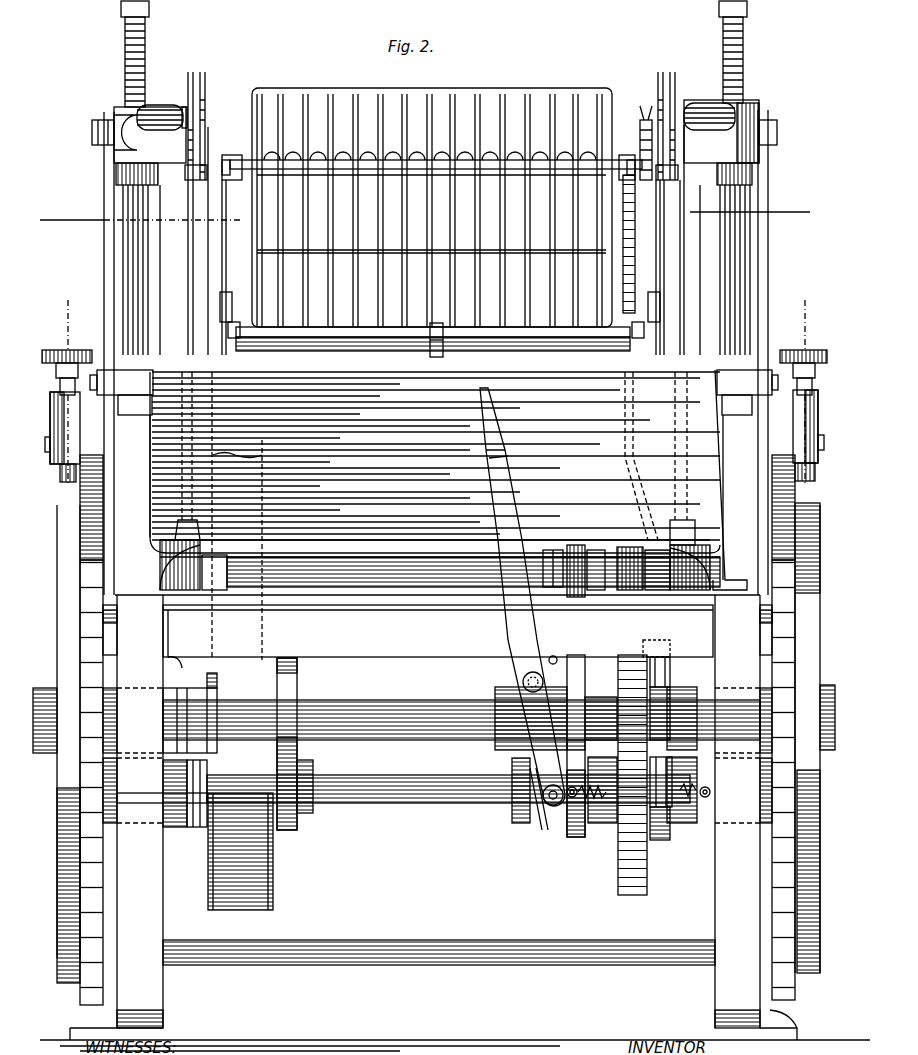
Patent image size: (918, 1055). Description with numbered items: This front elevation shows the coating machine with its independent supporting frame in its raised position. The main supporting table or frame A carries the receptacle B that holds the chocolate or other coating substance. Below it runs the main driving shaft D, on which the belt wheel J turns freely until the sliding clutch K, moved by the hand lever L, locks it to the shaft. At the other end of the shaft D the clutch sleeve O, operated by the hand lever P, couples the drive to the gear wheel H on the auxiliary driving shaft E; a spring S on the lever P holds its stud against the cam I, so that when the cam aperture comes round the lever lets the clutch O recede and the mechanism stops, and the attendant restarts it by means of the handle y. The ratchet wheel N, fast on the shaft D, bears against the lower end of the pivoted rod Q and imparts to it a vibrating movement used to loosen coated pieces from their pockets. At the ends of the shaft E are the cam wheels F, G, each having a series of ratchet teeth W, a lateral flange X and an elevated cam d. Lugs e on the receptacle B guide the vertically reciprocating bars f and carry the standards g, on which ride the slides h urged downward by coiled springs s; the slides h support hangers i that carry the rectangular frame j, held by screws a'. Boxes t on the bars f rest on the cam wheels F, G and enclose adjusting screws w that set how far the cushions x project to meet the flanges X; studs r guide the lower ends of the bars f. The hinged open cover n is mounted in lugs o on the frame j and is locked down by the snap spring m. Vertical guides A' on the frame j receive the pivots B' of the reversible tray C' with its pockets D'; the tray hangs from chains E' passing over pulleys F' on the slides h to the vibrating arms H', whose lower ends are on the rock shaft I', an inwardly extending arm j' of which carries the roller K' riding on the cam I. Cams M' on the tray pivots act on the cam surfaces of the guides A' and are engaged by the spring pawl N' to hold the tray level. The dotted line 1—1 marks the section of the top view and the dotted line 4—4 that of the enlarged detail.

The coiled spring s is at (146, 38).
The slide h is at (434, 142).
The vertically reciprocating bar f is at (104, 258).
The chain E' is at (444, 196).
The pulley F' is at (431, 113).
The hinged open frame or cover n is at (432, 199).
The vertically movable tray C' is at (436, 163).
The pocket D' is at (430, 143).
The cam M' is at (449, 167).
The spring pawl N' is at (637, 143).
The pivot B' is at (433, 180).
The dotted line 1 is at (425, 207).
The hanger i is at (428, 267).
The vertical guide A' is at (465, 267).
The pivoted rod Q is at (623, 255).
The screw a' is at (463, 291).
The lug o is at (236, 322).
The standard g is at (435, 270).
The rectangular frame j is at (433, 341).
The snap spring m is at (443, 352).
The lug e is at (434, 382).
The vertical adjusting screw w is at (434, 363).
The dotted line 4 is at (430, 393).
The box t is at (80, 425).
The elastic cushion x is at (60, 477).
The elevated cam d is at (103, 488).
The receptacle B is at (448, 480).
The vibrating arm H' is at (441, 516).
The handle y is at (500, 518).
The rock shaft I' is at (440, 565).
The inwardly extending arm j' is at (552, 550).
The roller K' is at (586, 554).
The gear wheel H is at (634, 702).
The main supporting table or frame A is at (433, 817).
The stud r is at (117, 615).
The cam wheel F is at (56, 731).
The cam wheel G is at (816, 739).
The lateral flange X is at (438, 867).
The ratchet teeth W is at (772, 856).
The auxiliary driving shaft E is at (461, 713).
The cam I is at (558, 746).
The main driving shaft D is at (403, 782).
The sliding clutch K is at (245, 790).
The hand lever L is at (285, 830).
The belt wheel J is at (273, 880).
The clutch sleeve O is at (512, 815).
The hand lever P is at (573, 793).
The spring S is at (707, 785).
The ratchet wheel N is at (673, 811).